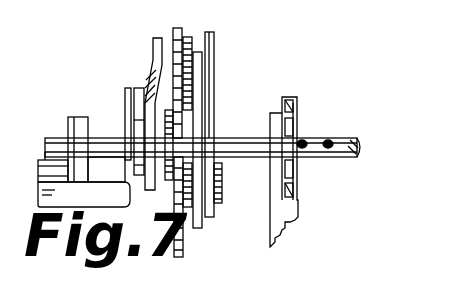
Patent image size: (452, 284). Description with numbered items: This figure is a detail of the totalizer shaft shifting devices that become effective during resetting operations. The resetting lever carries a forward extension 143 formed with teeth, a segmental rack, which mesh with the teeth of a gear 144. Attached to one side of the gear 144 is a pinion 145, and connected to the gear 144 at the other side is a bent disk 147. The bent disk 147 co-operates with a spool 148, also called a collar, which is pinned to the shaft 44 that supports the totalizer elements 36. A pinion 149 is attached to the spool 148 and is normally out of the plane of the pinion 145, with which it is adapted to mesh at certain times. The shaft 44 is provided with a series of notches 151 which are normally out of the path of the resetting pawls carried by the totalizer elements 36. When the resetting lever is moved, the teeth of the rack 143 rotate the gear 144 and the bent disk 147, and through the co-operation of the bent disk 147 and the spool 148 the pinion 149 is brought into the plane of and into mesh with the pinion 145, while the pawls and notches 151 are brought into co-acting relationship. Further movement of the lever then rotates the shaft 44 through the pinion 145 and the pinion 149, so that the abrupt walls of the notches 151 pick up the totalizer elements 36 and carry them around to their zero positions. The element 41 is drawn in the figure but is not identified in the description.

The totalizer elements 36 is at (288, 98).
The collar 41 is at (211, 88).
The shaft 44 is at (233, 138).
The forward extension 143 is at (207, 207).
The gear 144 is at (192, 61).
The pinion 145 is at (182, 48).
The bent disk 147 is at (157, 49).
The spool 148 is at (137, 137).
The pinion 149 is at (170, 180).
The notches 151 is at (329, 141).